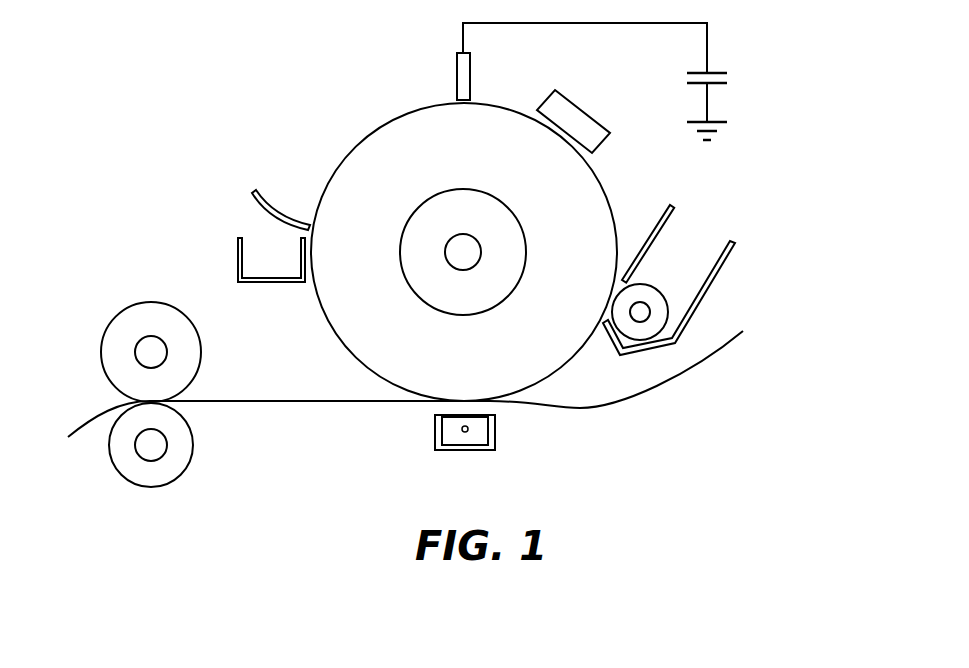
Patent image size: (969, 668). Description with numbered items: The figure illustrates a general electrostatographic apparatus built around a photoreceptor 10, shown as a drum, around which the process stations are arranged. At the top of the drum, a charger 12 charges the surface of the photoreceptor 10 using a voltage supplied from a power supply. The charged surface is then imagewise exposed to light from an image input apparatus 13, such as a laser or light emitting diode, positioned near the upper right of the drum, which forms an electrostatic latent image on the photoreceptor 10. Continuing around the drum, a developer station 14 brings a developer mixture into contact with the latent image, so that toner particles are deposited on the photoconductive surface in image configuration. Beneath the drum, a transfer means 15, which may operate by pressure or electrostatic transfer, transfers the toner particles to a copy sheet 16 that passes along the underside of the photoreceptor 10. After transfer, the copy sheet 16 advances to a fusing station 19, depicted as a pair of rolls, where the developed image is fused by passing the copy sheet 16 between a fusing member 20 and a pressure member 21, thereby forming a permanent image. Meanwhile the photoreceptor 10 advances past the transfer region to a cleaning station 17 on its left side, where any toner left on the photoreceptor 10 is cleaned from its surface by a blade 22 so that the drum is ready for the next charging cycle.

The photoreceptor 10 is at (608, 193).
The charger 12 is at (457, 75).
The image input apparatus 13 is at (580, 110).
The developer station 14 is at (700, 240).
The transfer means 15 is at (495, 437).
The copy sheet 16 is at (700, 363).
The cleaning station 17 is at (236, 208).
The fusing station 19 is at (128, 393).
The fusing member 20 is at (187, 325).
The pressure member 21 is at (187, 453).
The blade 22 is at (278, 220).